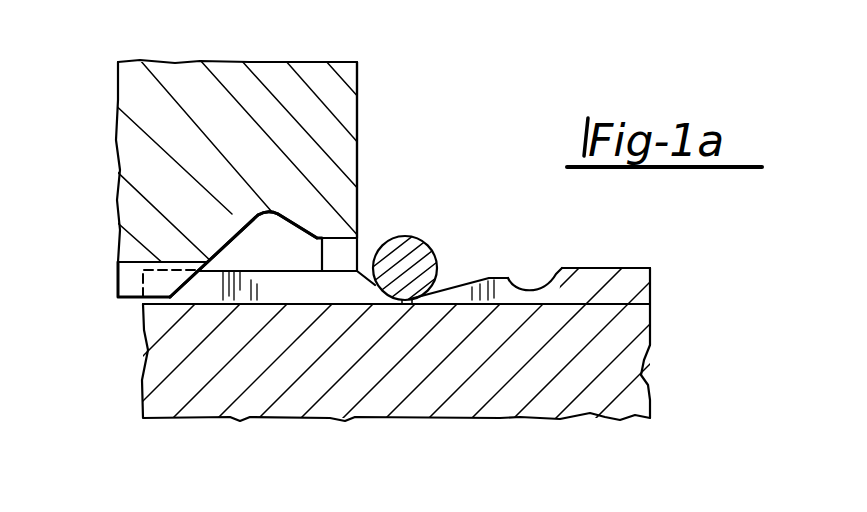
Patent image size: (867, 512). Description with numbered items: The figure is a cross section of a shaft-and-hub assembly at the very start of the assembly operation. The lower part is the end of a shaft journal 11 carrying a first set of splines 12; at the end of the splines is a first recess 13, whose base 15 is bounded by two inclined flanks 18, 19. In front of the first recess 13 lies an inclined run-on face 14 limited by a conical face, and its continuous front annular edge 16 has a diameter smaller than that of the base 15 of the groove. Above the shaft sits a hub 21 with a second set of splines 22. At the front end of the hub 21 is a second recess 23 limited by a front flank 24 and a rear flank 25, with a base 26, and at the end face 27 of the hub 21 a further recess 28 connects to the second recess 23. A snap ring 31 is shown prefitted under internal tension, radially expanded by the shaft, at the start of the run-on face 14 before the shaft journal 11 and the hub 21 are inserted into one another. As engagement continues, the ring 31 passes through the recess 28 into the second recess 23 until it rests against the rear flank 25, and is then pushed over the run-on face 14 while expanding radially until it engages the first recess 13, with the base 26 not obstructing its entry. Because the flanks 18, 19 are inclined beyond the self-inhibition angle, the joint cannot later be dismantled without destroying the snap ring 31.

The shaft journal 11 is at (190, 376).
The first set of splines 12 is at (291, 304).
The first recess 13 is at (547, 269).
The run-on face 14 is at (463, 305).
The base of the first recess 15 is at (533, 294).
The annular edge 16 is at (397, 305).
The flank of the first recess 18 is at (562, 270).
The flank of the first recess 19 is at (502, 281).
The hub 21 is at (153, 92).
The second set of splines 22 is at (130, 282).
The second recess 23 is at (236, 250).
The front flank 24 is at (293, 222).
The rear flank 25 is at (222, 244).
The base of the second recess 26 is at (266, 212).
The end face 27 is at (357, 117).
The recess 28 is at (345, 255).
The snap ring 31 is at (440, 265).